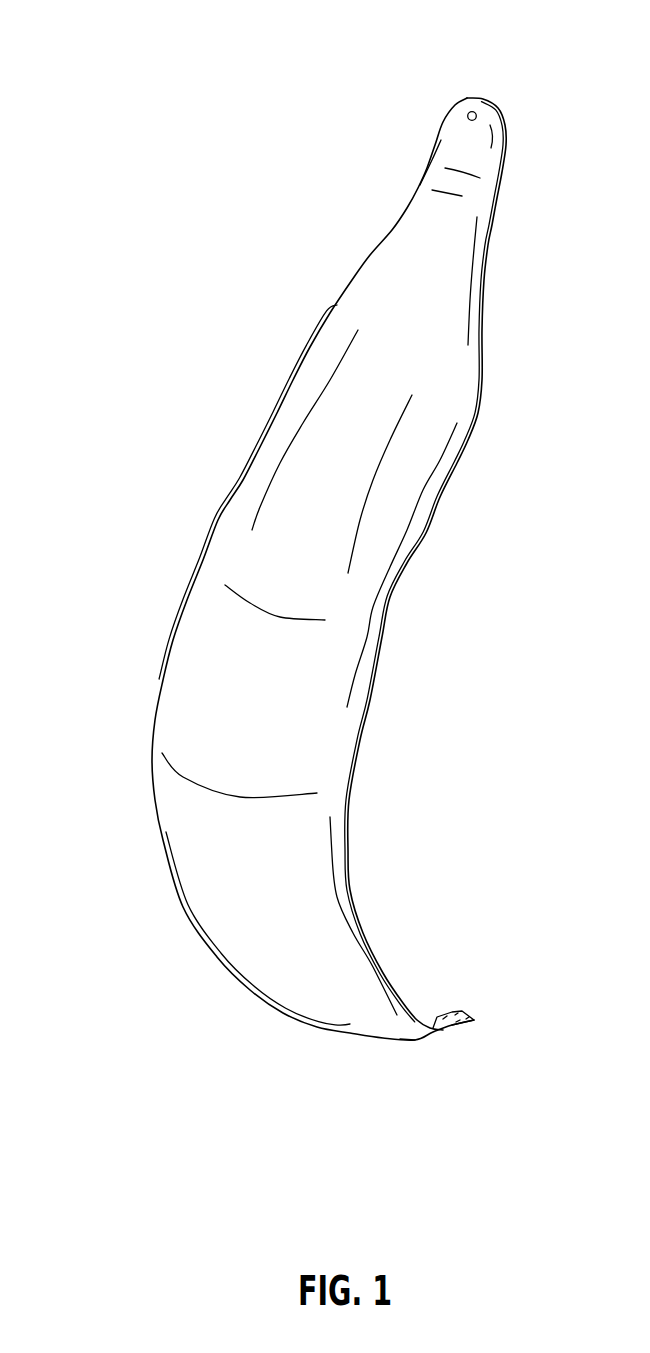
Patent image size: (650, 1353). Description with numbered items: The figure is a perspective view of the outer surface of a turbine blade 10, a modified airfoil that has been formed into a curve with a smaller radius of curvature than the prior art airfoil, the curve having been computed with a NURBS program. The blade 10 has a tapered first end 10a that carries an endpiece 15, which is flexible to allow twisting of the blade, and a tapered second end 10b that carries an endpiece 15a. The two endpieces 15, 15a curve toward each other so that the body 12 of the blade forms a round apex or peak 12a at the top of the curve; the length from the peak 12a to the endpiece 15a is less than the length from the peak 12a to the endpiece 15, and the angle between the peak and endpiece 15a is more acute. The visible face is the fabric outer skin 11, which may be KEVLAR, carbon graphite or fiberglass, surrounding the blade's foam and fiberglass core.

The turbine blade 10 is at (147, 318).
The tapered first end 10a is at (436, 81).
The tapered second end 10b is at (470, 1054).
The outer skin 11 is at (340, 787).
The body 12 is at (285, 663).
The peak 12a is at (131, 805).
The endpiece 15 is at (482, 143).
The endpiece 15a is at (433, 1023).